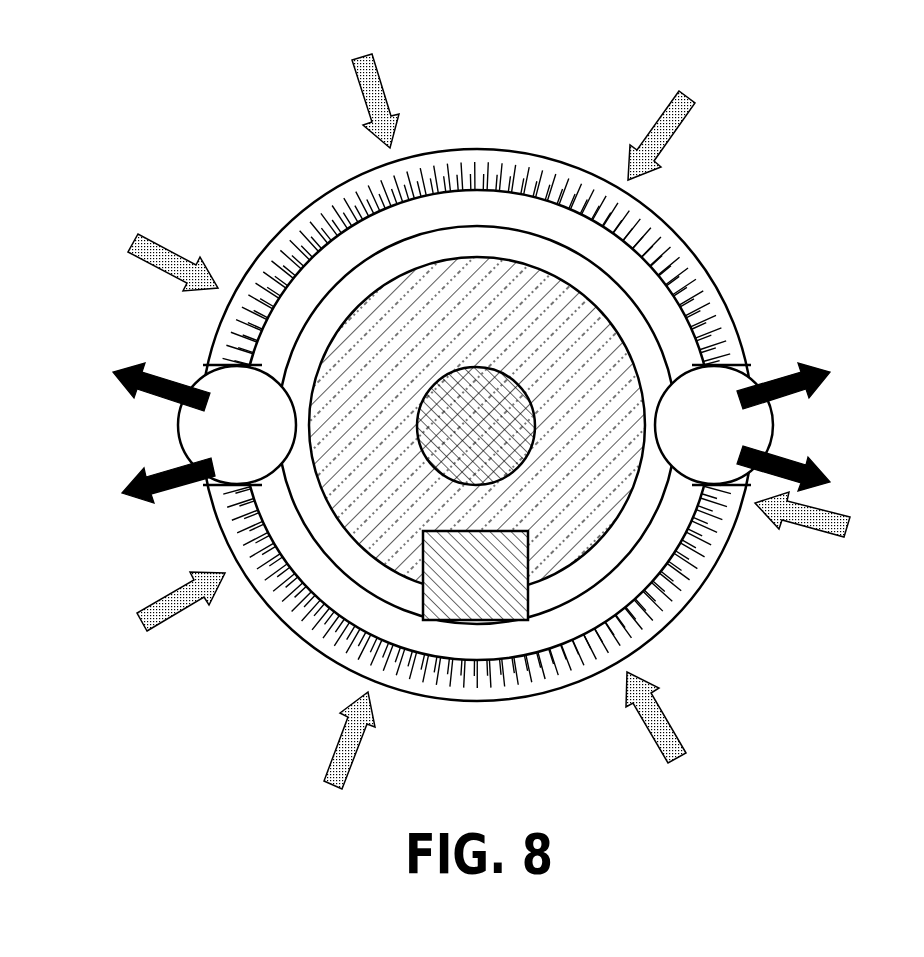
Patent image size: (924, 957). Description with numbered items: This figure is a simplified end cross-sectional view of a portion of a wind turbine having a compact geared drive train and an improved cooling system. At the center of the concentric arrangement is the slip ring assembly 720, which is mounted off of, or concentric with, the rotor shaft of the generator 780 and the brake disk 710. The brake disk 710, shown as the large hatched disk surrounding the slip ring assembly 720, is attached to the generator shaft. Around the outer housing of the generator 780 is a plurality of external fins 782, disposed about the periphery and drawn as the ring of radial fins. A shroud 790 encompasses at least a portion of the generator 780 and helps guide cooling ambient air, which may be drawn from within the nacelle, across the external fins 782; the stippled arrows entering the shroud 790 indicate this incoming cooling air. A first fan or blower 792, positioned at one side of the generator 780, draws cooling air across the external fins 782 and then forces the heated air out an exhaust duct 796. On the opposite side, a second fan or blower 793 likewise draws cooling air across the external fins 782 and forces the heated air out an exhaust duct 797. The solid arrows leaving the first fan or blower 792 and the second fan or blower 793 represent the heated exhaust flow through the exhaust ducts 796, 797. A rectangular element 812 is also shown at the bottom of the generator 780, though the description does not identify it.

The brake disk 710 is at (362, 297).
The slip ring assembly 720 is at (477, 366).
The generator 780 is at (640, 250).
The external fins 782 is at (600, 186).
The shroud 790 is at (667, 221).
The first fan or blower 792 is at (758, 372).
The second fan or blower 793 is at (190, 377).
The exhaust duct 796 is at (775, 425).
The exhaust duct 797 is at (178, 428).
The block element 812 is at (480, 620).